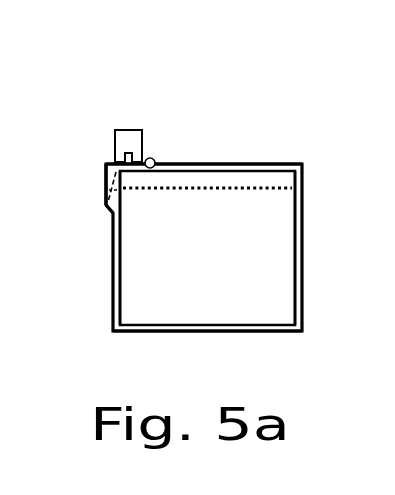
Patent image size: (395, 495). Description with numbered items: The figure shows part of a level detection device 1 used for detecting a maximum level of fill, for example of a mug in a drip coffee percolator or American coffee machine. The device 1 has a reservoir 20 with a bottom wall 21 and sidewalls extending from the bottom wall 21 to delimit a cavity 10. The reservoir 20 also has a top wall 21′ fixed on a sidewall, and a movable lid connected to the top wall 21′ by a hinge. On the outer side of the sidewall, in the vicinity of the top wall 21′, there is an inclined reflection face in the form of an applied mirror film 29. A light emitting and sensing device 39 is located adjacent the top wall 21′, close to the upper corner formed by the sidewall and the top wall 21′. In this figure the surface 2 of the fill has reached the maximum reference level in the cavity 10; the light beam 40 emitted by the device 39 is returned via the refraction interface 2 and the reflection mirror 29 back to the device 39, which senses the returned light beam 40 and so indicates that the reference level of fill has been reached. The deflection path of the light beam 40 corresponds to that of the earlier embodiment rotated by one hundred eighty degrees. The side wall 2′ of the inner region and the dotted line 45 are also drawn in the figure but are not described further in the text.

The packaging arrangement 1 is at (100, 86).
The outer sleeve 20 is at (200, 124).
The bottom wall of sleeve 21 is at (235, 332).
The left side wall of sleeve 21′ is at (105, 162).
The inner box 2 is at (200, 190).
The inner box side wall 2′ is at (278, 250).
The perforation line 45 is at (128, 192).
The fold flap 40 is at (100, 188).
The bevelled corner 29 is at (95, 223).
The locking element 39 is at (118, 143).
The contents 10 is at (234, 294).